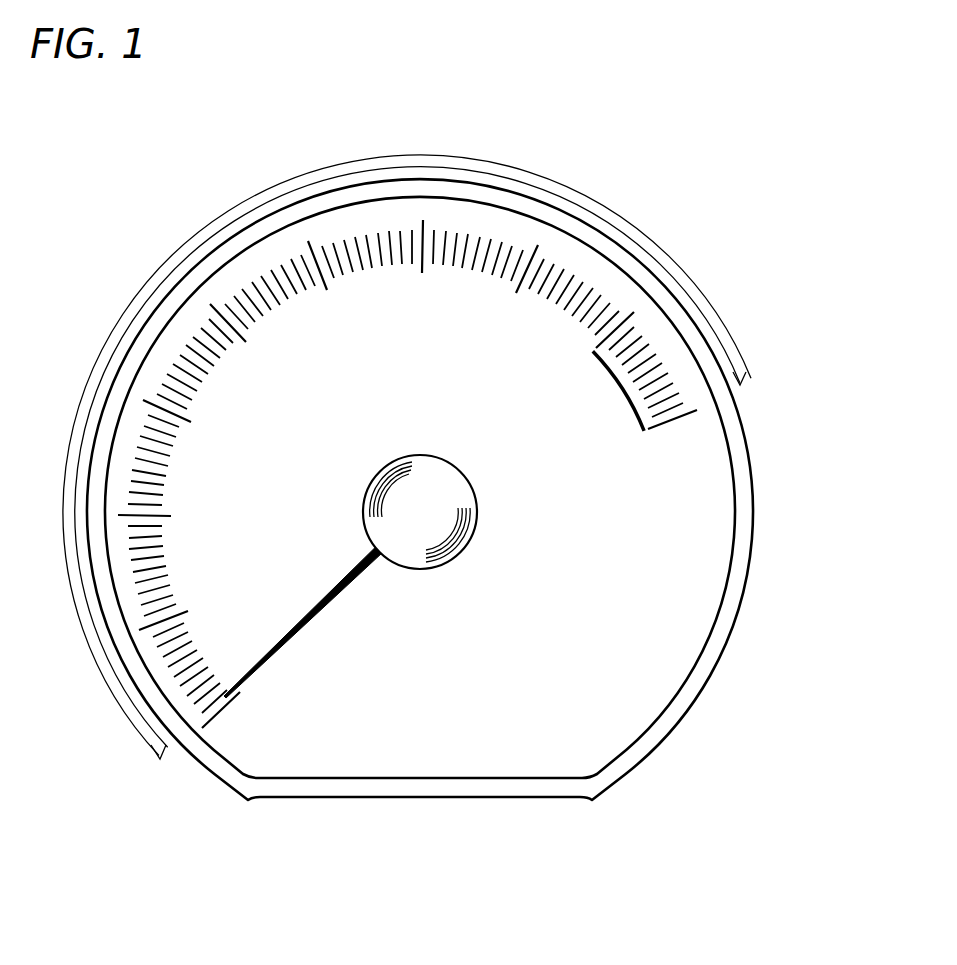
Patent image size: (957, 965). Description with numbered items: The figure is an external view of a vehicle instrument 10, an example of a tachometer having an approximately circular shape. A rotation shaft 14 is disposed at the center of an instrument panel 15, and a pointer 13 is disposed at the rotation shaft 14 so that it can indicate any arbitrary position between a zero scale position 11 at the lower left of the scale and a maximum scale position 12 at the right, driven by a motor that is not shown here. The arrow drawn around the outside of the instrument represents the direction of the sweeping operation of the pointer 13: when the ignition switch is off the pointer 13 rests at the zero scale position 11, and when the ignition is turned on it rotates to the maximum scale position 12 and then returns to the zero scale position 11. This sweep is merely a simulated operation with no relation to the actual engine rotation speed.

The vehicle instrument 10 is at (768, 530).
The zero scale position 11 is at (206, 706).
The maximum scale position 12 is at (700, 405).
The pointer 13 is at (336, 593).
The rotation shaft 14 is at (472, 480).
The instrument panel 15 is at (648, 650).